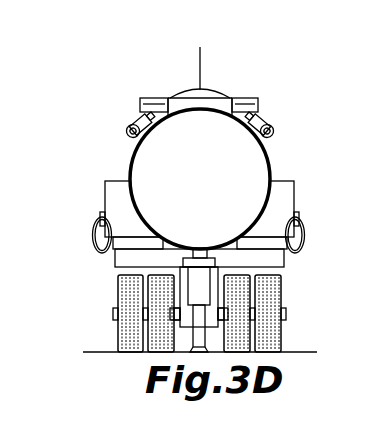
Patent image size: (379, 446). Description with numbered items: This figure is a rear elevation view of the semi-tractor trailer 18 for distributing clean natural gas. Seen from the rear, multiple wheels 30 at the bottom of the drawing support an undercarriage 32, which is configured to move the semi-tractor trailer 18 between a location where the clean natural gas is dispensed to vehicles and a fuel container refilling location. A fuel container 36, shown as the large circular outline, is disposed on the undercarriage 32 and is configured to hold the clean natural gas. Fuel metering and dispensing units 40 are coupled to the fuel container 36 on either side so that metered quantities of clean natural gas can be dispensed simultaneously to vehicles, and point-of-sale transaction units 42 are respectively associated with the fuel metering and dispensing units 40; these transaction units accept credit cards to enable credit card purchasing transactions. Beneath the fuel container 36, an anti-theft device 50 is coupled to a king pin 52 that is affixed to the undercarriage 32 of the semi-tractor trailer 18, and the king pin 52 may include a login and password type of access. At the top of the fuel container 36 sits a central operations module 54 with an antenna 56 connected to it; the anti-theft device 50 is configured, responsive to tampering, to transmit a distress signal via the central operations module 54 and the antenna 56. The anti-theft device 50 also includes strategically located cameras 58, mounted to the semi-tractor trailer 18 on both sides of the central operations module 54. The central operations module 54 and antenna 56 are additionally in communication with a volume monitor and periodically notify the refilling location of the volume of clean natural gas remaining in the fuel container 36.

The semi-tractor trailer 18 is at (314, 114).
The wheels 30 is at (117, 330).
The undercarriage 32 is at (284, 262).
The fuel container 36 is at (265, 163).
The fuel metering and dispensing units 40 is at (93, 238).
The point-of-sale transaction units 42 is at (105, 193).
The anti-theft device 50 is at (200, 248).
The king pin 52 is at (212, 258).
The central operations module 54 is at (238, 99).
The antenna 56 is at (200, 63).
The cameras 58 is at (130, 117).